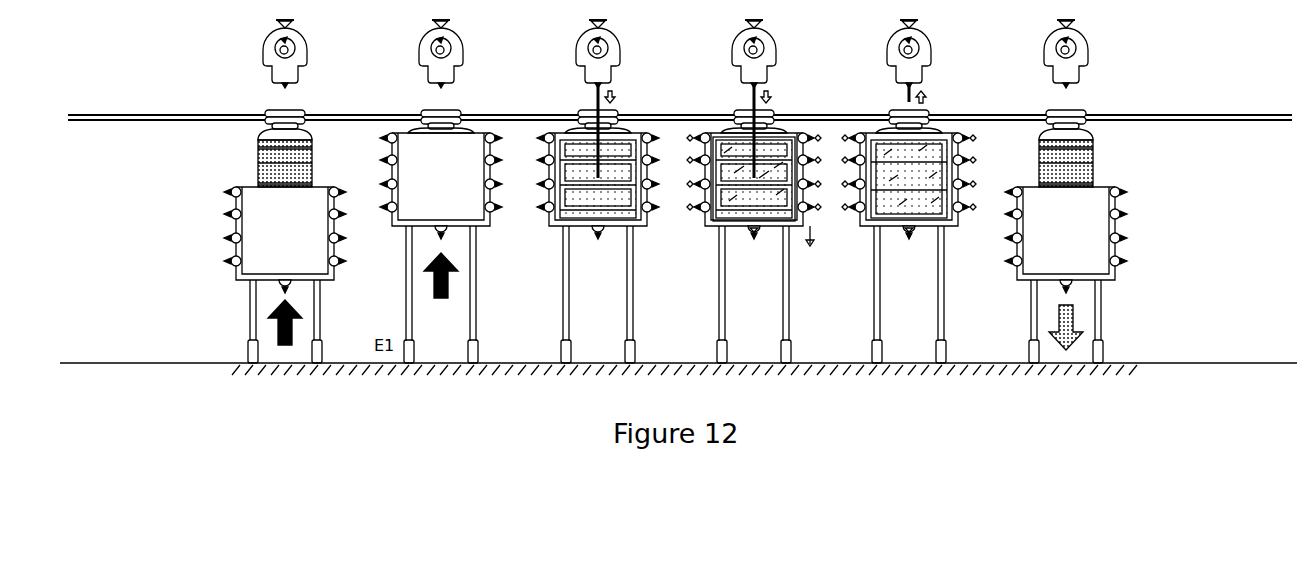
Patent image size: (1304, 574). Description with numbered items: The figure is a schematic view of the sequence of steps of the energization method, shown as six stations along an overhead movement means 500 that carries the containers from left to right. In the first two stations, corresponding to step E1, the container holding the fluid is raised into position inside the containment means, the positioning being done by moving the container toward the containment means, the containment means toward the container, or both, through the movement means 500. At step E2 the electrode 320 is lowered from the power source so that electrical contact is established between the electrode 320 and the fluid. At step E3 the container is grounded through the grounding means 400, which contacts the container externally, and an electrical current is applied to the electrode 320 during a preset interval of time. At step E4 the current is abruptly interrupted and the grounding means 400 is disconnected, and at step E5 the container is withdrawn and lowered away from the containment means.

The movement means 500 is at (680, 99).
The electrode 320 is at (562, 129).
The grounding means 400 is at (831, 239).
The step of positioning the container E1 is at (283, 191).
The step of establishing electrical contact E2 is at (593, 191).
The step of applying electrical current E3 is at (771, 191).
The step of interrupting the electrical current E4 is at (909, 191).
The step of withdrawing the container E5 is at (1063, 191).